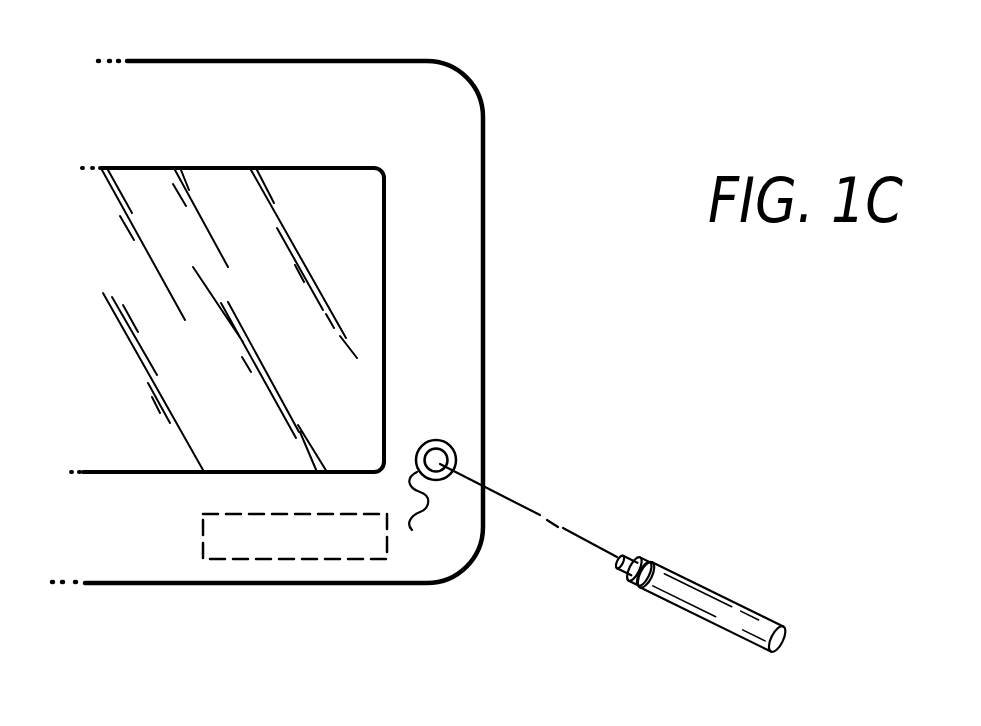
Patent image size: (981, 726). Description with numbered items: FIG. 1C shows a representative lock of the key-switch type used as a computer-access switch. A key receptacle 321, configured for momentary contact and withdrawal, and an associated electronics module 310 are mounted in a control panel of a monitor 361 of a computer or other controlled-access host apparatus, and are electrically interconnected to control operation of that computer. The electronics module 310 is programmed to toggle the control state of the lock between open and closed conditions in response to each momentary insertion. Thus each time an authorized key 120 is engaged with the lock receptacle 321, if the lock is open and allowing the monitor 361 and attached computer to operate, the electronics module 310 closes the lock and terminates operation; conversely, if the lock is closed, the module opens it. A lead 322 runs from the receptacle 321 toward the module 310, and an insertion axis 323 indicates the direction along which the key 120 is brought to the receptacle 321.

The monitor 361 is at (450, 192).
The electronics module 310 is at (307, 560).
The key receptacle 321 is at (433, 442).
The flexible lead 322 is at (418, 522).
The insertion axis 323 is at (528, 507).
The key 120 is at (695, 590).